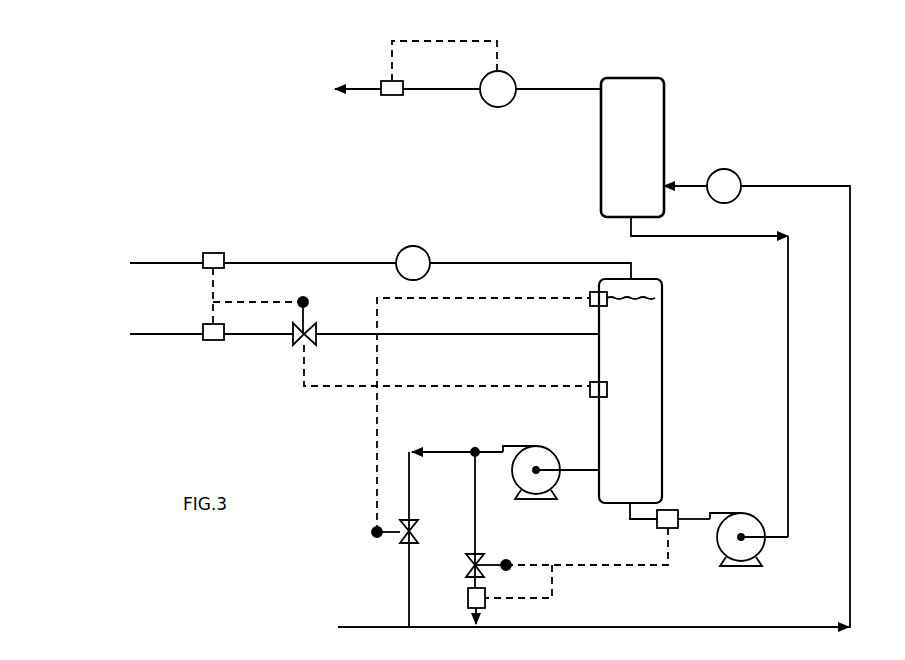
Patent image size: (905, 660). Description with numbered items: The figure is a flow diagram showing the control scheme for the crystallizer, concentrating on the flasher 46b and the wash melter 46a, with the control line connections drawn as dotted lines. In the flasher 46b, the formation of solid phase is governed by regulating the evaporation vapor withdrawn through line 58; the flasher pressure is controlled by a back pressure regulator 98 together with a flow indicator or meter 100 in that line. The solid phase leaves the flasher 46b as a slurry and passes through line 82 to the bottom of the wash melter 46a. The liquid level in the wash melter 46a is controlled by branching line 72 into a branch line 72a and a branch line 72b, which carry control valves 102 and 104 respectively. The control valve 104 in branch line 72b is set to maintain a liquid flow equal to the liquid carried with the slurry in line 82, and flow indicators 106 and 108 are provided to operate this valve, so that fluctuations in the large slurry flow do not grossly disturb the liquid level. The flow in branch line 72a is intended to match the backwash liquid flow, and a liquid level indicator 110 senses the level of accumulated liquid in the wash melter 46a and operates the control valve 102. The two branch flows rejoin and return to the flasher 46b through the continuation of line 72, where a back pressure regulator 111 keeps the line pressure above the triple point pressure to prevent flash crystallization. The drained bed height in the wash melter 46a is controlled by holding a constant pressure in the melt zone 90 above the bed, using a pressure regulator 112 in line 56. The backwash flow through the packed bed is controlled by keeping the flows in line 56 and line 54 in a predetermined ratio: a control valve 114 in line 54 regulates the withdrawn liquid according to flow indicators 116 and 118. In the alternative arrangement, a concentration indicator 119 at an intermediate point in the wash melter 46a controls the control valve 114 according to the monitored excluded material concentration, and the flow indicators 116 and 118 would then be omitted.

The line 58 is at (546, 89).
The flow indicator 100 is at (392, 95).
The back pressure regulator 98 is at (500, 107).
The flasher 46b is at (655, 142).
The back pressure regulator 111 is at (728, 193).
The line 82 is at (788, 363).
The line 56 is at (532, 240).
The flow indicator 116 is at (222, 253).
The pressure regulator 112 is at (420, 255).
The line 54 is at (478, 334).
The flow indicator 118 is at (216, 340).
The control valve 114 is at (312, 345).
The wash melter 46a is at (662, 425).
The melt zone 90 is at (645, 290).
The liquid level indicator 110 is at (590, 304).
The concentration indicator 119 is at (592, 382).
The line 72 is at (583, 470).
The branch line 72a is at (409, 493).
The branch line 72b is at (475, 525).
The control valve 102 is at (404, 540).
The control valve 104 is at (467, 573).
The flow indicator 108 is at (484, 604).
The flow indicator 106 is at (672, 510).